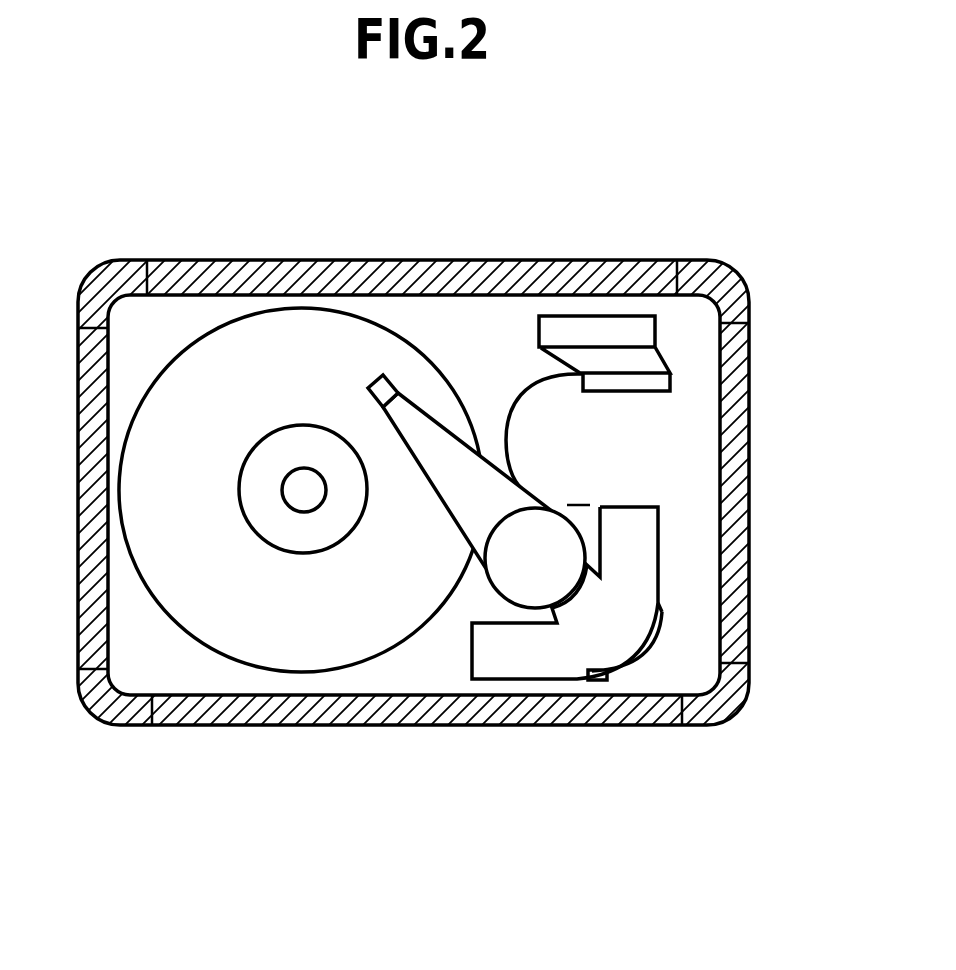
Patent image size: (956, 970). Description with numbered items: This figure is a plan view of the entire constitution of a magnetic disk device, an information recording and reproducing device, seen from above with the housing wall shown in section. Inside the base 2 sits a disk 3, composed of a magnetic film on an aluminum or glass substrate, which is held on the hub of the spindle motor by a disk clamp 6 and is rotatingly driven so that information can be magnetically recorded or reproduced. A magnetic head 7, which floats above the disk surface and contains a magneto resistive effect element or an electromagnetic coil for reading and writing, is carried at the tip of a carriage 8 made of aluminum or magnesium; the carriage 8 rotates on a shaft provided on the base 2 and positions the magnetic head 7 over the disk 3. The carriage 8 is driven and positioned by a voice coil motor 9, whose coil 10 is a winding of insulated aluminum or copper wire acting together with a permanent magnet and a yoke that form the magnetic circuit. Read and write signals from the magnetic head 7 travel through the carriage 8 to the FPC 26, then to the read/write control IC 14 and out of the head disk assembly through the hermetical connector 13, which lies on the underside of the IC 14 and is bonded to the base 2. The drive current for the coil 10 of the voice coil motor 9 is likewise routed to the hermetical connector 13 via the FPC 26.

The base 2 is at (265, 261).
The disk 3 is at (160, 473).
The disk clamp 6 is at (297, 447).
The magnetic head 7 is at (375, 388).
The carriage 8 is at (513, 474).
The voice coil motor 9 is at (545, 653).
The coil 10 is at (623, 675).
The hermetical connector 13 is at (595, 335).
The read/write control IC 14 is at (672, 383).
The FPC (flexible printed board) 26 is at (508, 417).